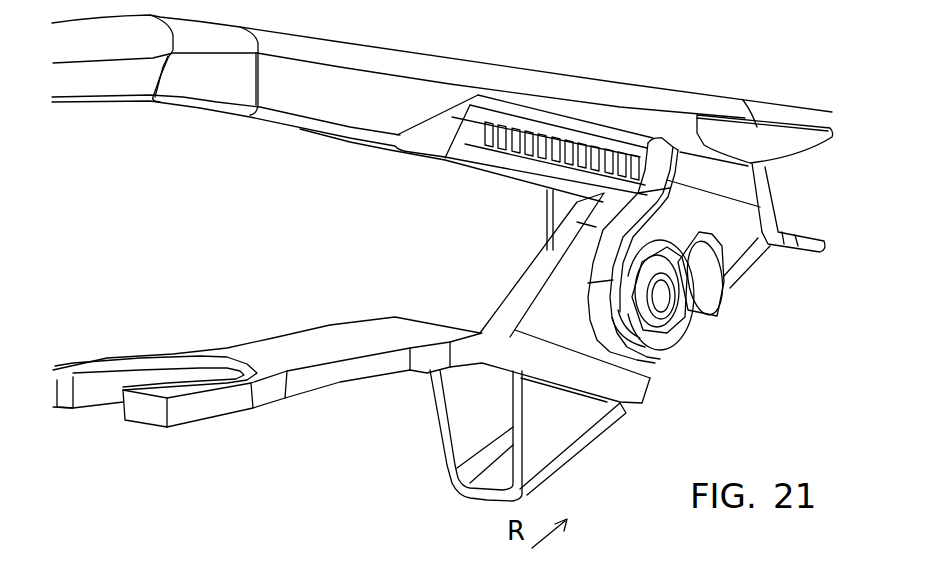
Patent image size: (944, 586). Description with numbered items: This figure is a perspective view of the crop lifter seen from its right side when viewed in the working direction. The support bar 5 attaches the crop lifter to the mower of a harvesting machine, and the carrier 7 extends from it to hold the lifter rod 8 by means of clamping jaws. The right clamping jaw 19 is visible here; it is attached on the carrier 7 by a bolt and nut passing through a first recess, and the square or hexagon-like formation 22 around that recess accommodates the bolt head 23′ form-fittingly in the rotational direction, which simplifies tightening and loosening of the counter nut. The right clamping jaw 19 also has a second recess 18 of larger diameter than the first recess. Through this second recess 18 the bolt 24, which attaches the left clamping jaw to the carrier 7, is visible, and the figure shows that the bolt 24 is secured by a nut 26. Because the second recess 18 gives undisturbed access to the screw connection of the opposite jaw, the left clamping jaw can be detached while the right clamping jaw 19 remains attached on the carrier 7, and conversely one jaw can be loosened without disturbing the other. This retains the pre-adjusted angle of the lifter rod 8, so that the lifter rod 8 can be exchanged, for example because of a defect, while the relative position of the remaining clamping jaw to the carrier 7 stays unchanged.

The support bar 5 is at (330, 335).
The carrier 7 is at (568, 271).
The lifter rod 8 is at (675, 103).
The second recess 18 is at (660, 338).
The clamping jaw 19 is at (748, 230).
The formation 22 is at (702, 240).
The bolt head 23′ is at (707, 285).
The bolt 24 is at (664, 300).
The nut 26 is at (680, 340).